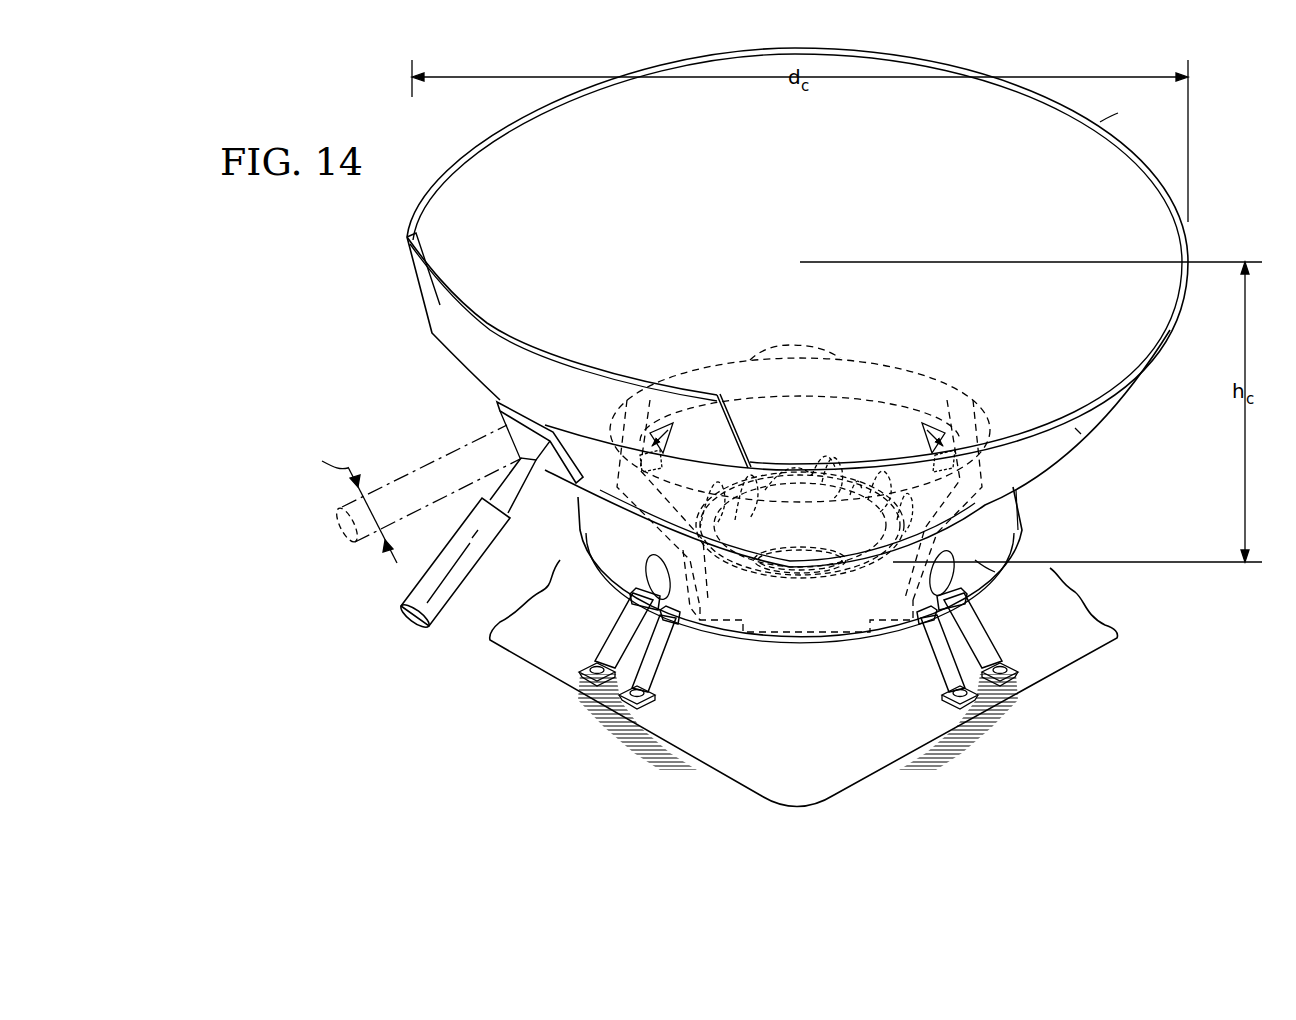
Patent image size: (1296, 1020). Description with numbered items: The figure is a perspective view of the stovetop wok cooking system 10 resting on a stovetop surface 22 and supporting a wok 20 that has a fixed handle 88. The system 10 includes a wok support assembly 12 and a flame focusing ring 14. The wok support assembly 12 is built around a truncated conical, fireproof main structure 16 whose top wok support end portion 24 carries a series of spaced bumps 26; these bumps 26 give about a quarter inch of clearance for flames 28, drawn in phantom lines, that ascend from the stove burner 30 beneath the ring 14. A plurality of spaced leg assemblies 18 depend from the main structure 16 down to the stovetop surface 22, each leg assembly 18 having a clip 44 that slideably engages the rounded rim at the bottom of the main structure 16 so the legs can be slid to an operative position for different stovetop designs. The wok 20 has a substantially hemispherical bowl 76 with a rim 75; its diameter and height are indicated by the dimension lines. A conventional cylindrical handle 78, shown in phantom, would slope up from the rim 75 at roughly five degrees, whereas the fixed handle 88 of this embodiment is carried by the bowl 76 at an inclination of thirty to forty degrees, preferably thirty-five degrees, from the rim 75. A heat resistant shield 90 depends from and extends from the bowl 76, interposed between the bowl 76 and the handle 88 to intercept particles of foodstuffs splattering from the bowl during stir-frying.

The stovetop wok cooking system 10 is at (555, 645).
The wok support assembly 12 is at (1030, 517).
The flame focusing ring 14 is at (917, 540).
The main structure 16 is at (982, 566).
The leg assemblies 18 is at (663, 672).
The wok 20 is at (1150, 380).
The stovetop surface 22 is at (1083, 630).
The top wok support end portion 24 is at (878, 358).
The bumps 26 is at (813, 345).
The flames 28 is at (825, 458).
The stove burner 30 is at (855, 490).
The clip 44 is at (640, 598).
The rim 75 is at (1097, 123).
The bowl 76 is at (1076, 428).
The conventional cylindrical handle 78 is at (430, 463).
The fixed handle 88 is at (432, 627).
The heat resistant shield 90 is at (440, 302).